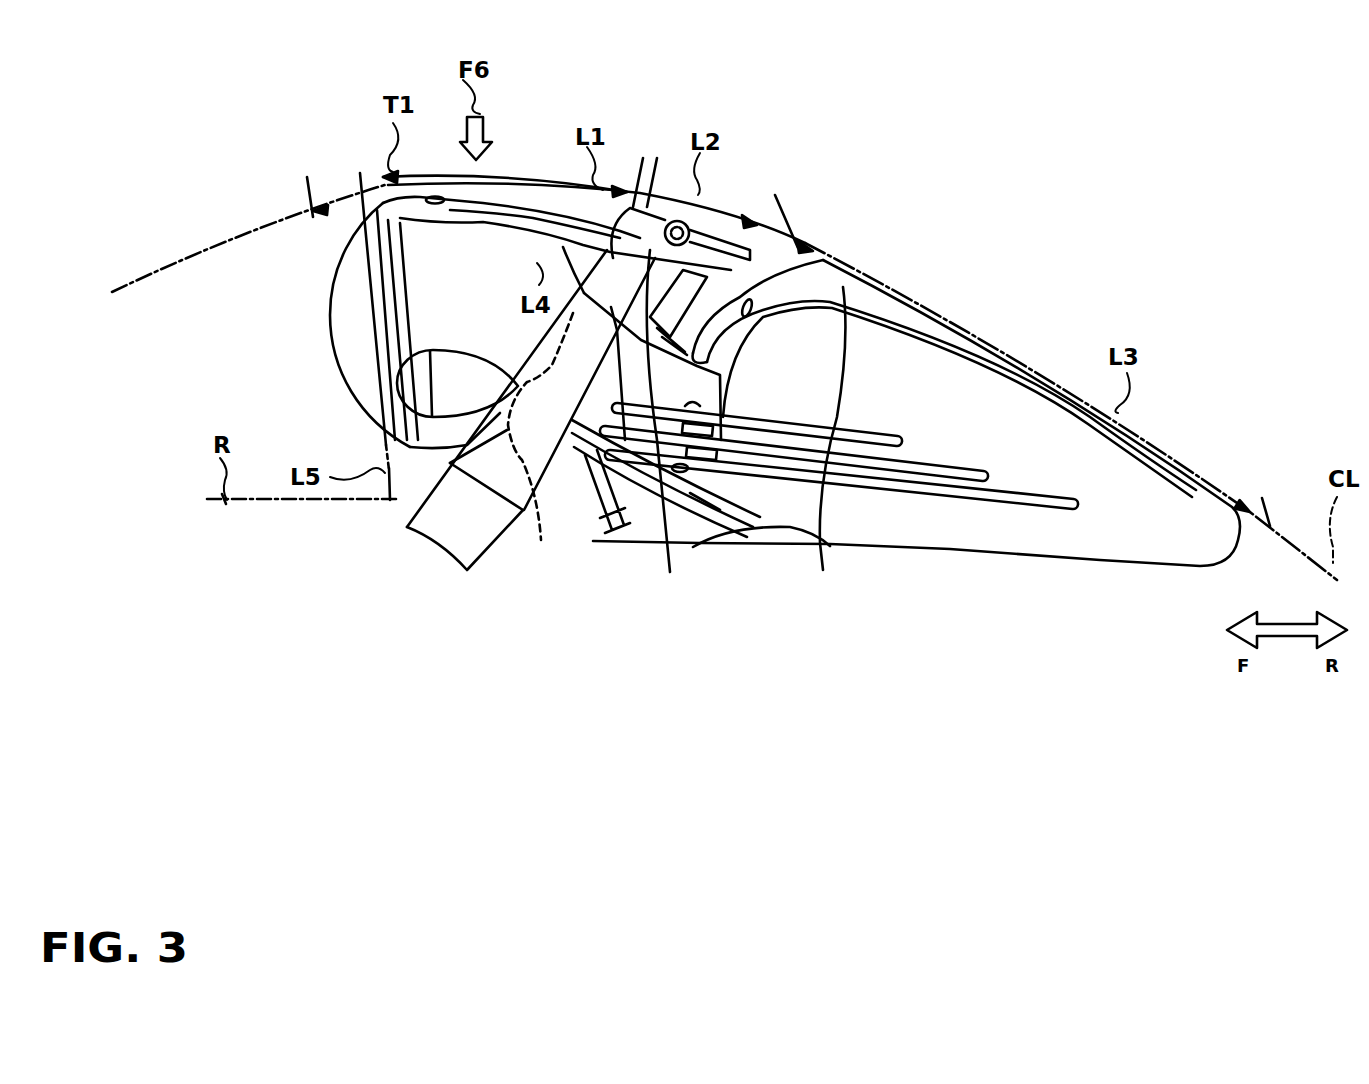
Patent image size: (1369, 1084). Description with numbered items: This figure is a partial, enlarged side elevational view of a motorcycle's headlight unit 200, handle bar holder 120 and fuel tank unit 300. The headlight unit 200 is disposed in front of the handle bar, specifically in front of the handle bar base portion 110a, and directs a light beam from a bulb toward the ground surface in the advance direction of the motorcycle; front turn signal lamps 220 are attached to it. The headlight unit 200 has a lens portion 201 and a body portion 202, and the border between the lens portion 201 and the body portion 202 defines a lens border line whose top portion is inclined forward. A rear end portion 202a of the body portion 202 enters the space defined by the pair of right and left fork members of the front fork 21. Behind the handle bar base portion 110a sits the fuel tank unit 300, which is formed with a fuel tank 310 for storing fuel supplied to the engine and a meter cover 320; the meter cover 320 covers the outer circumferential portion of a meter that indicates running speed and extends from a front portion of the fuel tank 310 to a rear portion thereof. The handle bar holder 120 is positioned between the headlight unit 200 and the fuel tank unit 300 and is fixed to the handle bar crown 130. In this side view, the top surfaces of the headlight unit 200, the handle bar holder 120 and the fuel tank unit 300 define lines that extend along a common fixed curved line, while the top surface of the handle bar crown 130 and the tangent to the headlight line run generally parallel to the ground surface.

The front fork 21 is at (493, 478).
The handle bar base portion 110a is at (690, 220).
The handle bar holder 120 is at (666, 430).
The handle bar crown 130 is at (597, 540).
The headlight unit 200 is at (242, 288).
The lens portion 201 is at (350, 348).
The body portion 202 is at (435, 283).
The rear end portion 202a is at (550, 485).
The front turn signal lamps 220 is at (433, 223).
The fuel tank unit 300 is at (940, 602).
The fuel tank 310 is at (907, 513).
The meter cover 320 is at (822, 548).